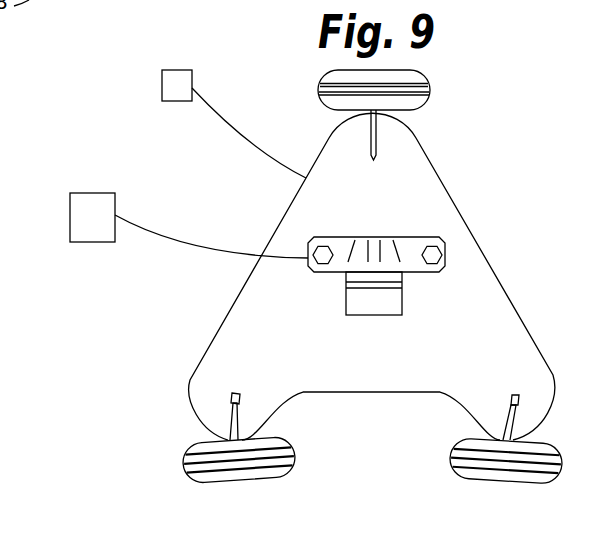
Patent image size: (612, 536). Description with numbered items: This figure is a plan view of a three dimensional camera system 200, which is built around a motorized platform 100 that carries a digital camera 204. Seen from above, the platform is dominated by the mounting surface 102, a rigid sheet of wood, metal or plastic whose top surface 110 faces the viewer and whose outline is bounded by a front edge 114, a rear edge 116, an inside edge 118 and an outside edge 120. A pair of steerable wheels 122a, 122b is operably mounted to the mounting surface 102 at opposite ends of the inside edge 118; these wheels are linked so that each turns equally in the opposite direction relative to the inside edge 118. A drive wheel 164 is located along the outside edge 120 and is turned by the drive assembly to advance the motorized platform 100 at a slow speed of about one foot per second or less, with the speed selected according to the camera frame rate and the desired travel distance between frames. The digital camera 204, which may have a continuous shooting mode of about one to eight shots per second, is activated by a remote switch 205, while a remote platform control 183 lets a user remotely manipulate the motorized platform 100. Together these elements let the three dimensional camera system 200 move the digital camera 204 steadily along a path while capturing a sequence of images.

The motorized platform 100 is at (433, 162).
The mounting surface 102 is at (470, 308).
The top surface 110 is at (252, 307).
The front edge 114 is at (518, 333).
The rear edge 116 is at (284, 218).
The inside edge 118 is at (352, 392).
The outside edge 120 is at (340, 124).
The steerable wheel 122a is at (462, 482).
The steerable wheel 122b is at (217, 482).
The drive wheel 164 is at (420, 73).
The remote platform control 183 is at (175, 102).
The 3D camera system 200 is at (125, 416).
The digital camera 204 is at (412, 238).
The remote switch 205 is at (105, 193).